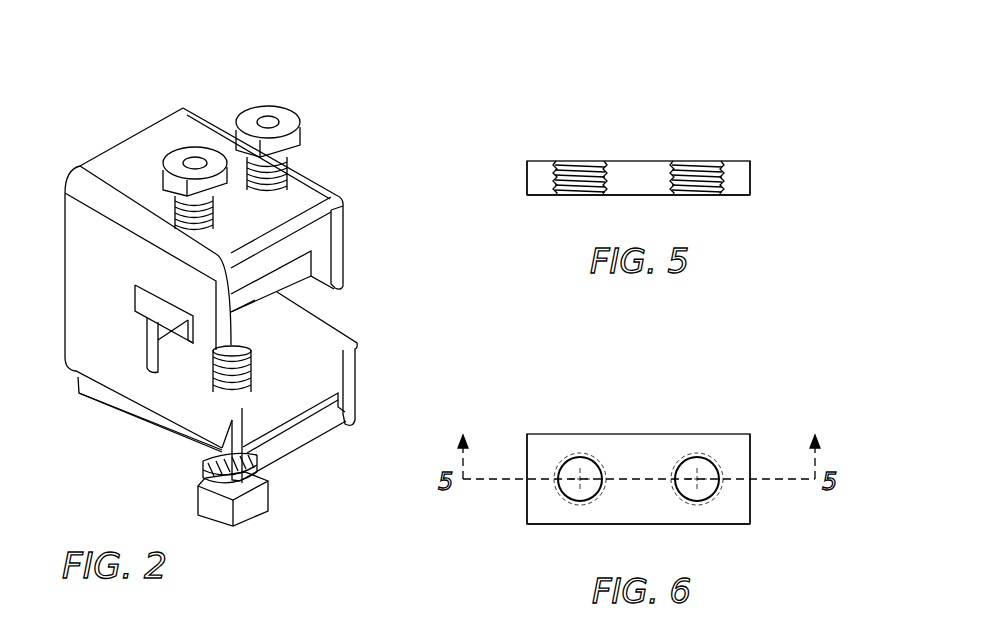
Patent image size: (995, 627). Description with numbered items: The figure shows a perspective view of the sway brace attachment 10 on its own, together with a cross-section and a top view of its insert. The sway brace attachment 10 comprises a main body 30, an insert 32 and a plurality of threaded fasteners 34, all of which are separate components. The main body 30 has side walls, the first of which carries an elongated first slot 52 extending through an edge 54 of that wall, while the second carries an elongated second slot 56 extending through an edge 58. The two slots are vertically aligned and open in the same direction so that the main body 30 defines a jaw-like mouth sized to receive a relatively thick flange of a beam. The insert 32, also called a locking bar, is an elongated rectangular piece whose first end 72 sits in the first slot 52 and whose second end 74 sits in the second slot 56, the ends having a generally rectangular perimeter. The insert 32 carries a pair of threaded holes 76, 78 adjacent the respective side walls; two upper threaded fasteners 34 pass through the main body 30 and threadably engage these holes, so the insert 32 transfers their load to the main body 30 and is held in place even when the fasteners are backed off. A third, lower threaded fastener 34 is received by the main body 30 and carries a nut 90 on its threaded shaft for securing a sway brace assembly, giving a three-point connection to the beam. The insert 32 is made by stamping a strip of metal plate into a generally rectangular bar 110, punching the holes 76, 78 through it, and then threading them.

In FIG. 2, the sway brace attachment 10 is at (362, 92).
In FIG. 2, the main body 30 is at (62, 230).
In FIG. 2, the insert 32 is at (172, 338).
In FIG. 5, the insert 32 is at (645, 108).
In FIG. 6, the insert 32 is at (767, 527).
In FIG. 2, the threaded fasteners 34 is at (178, 162).
In FIG. 2, the first slot 52 is at (181, 364).
In FIG. 2, the edge of the first side wall 54 is at (232, 327).
In FIG. 2, the second slot 56 is at (360, 314).
In FIG. 2, the edge of the second side wall 58 is at (339, 235).
In FIG. 5, the first end 72 is at (537, 176).
In FIG. 6, the first end 72 is at (540, 467).
In FIG. 5, the second end 74 is at (740, 180).
In FIG. 6, the second end 74 is at (737, 473).
In FIG. 5, the first threaded hole 76 is at (590, 160).
In FIG. 6, the first threaded hole 76 is at (580, 458).
In FIG. 5, the second threaded hole 78 is at (710, 160).
In FIG. 6, the second threaded hole 78 is at (697, 458).
In FIG. 2, the nut 90 is at (186, 469).
In FIG. 5, the bar 110 is at (757, 192).
In FIG. 6, the bar 110 is at (544, 541).